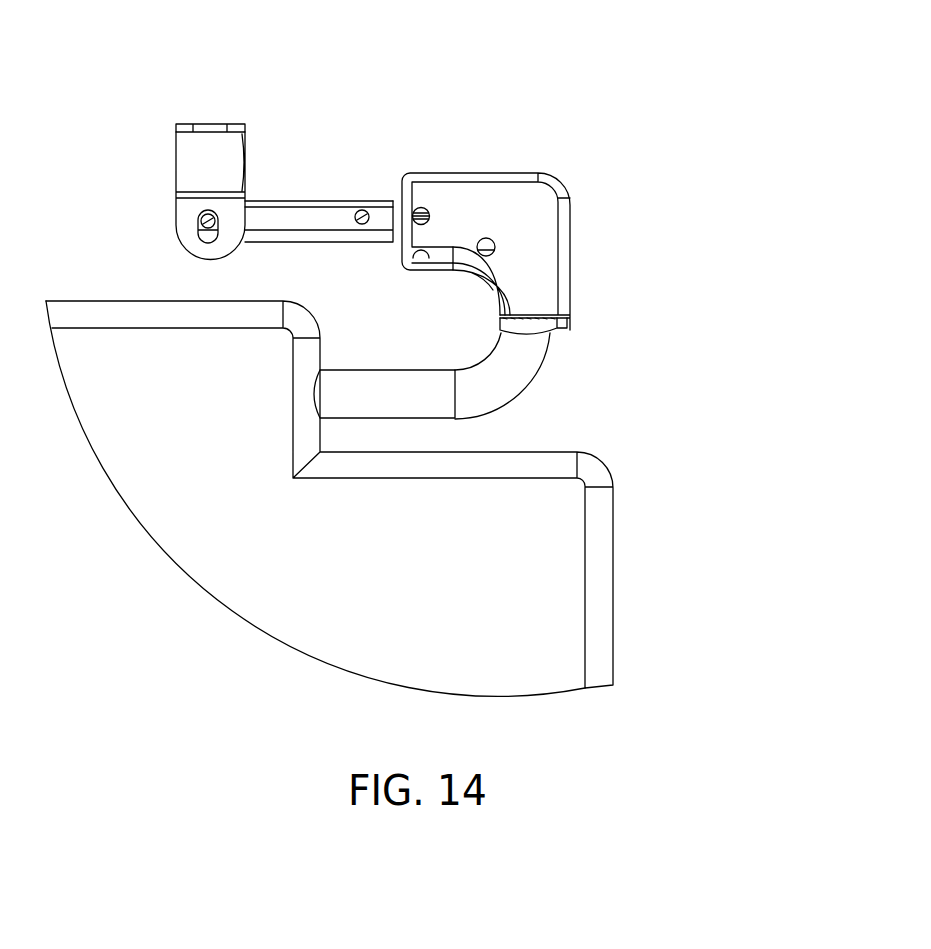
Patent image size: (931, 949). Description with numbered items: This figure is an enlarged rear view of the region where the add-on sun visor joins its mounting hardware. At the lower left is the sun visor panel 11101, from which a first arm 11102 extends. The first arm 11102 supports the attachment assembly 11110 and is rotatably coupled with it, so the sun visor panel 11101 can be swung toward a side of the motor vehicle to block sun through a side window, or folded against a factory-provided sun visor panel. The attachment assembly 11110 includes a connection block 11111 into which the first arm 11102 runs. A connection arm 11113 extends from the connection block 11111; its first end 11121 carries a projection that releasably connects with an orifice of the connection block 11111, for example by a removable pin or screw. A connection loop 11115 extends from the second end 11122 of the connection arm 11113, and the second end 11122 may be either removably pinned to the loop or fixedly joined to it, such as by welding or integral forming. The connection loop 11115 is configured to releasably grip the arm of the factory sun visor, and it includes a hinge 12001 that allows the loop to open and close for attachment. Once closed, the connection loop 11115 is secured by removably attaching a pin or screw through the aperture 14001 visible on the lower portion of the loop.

The attachment assembly 11110 is at (420, 174).
The connection block 11111 is at (563, 258).
The connection arm 11113 is at (297, 215).
The second end 11122 is at (263, 213).
The first end 11121 is at (362, 210).
The connection loop 11115 is at (156, 160).
The hinge 12001 is at (211, 123).
The aperture 14001 is at (190, 229).
The first arm 11102 is at (455, 418).
The sun visor panel 11101 is at (235, 565).